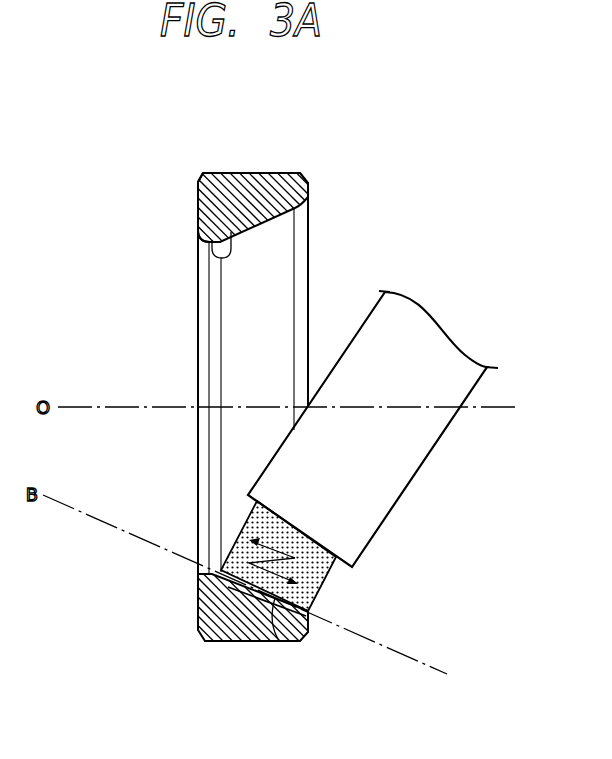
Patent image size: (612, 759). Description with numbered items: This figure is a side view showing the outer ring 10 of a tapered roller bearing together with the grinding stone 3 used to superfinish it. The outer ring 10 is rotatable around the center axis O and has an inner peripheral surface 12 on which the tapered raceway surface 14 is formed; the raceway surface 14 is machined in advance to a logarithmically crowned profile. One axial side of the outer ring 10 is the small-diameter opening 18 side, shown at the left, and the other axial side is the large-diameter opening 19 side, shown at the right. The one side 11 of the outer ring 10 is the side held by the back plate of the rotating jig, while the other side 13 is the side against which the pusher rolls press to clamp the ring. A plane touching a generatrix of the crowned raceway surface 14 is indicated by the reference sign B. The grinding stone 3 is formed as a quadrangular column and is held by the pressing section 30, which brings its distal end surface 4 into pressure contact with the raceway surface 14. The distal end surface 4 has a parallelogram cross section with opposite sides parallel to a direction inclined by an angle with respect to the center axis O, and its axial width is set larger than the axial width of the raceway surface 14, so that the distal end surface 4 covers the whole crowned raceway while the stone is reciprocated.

The outer ring 10 is at (253, 171).
The one side of the outer ring 11 is at (195, 220).
The inner peripheral surface 12 is at (231, 233).
The other side of the outer ring 13 is at (309, 190).
The tapered raceway surface 14 is at (236, 574).
The small-diameter opening 18 is at (196, 293).
The large-diameter opening 19 is at (309, 242).
The grinding stone 3 is at (314, 572).
The distal end surface 4 is at (280, 642).
The pressing section 30 is at (382, 467).